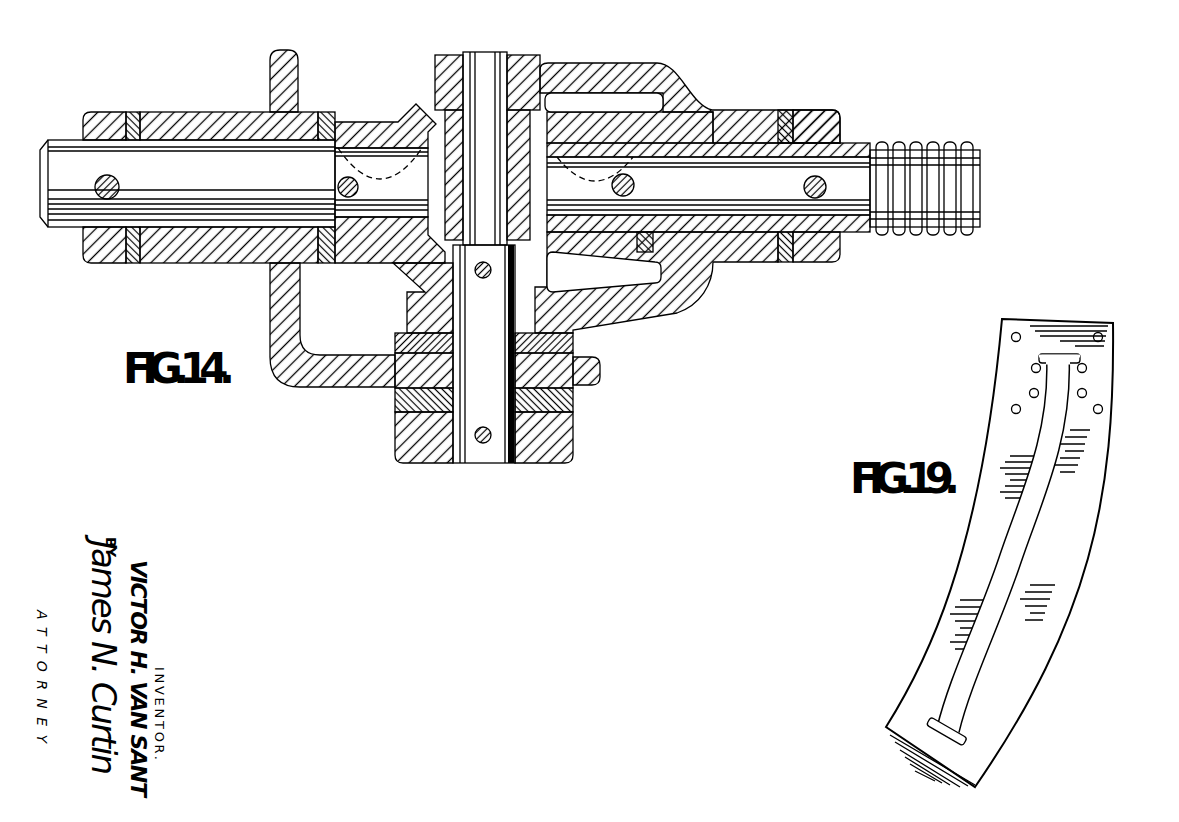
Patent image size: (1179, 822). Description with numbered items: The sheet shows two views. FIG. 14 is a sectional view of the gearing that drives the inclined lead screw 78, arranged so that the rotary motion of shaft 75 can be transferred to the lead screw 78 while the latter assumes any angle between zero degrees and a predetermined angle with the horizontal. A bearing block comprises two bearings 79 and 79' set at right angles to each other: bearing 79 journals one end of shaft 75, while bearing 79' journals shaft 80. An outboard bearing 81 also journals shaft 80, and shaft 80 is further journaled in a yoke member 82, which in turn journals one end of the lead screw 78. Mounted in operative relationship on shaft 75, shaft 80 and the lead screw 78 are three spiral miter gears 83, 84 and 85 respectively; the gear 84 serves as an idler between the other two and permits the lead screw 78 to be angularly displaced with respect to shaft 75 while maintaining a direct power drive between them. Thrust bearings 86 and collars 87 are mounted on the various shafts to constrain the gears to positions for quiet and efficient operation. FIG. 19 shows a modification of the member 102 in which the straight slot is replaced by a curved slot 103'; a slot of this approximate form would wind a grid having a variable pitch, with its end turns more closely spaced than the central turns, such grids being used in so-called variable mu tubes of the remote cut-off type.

In FIG. 14, the shaft 75 is at (226, 230).
In FIG. 14, the lead screw 78 is at (930, 222).
In FIG. 14, the bearing 79 is at (229, 203).
In FIG. 14, the bearing 79' is at (428, 147).
In FIG. 14, the shaft 80 is at (510, 63).
In FIG. 14, the outboard bearing 81 is at (393, 390).
In FIG. 14, the yoke member 82 is at (626, 320).
In FIG. 14, the spiral miter gear 83 is at (377, 127).
In FIG. 14, the spiral miter gear 84 is at (427, 277).
In FIG. 14, the spiral miter gear 85 is at (610, 127).
In FIG. 14, the thrust bearing 86 is at (338, 88).
In FIG. 14, the collar 87 is at (117, 113).
In FIG. 19, the member 102 is at (1057, 637).
In FIG. 19, the curved slot 103' is at (1040, 550).